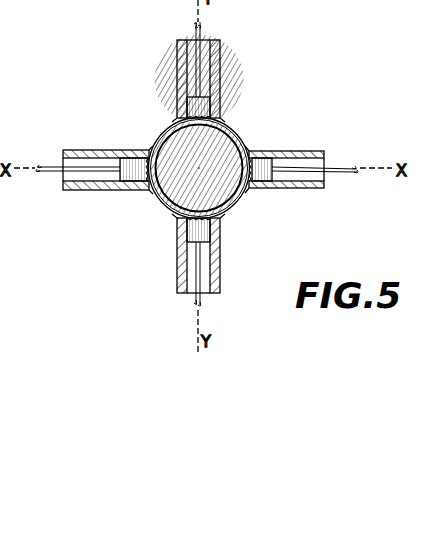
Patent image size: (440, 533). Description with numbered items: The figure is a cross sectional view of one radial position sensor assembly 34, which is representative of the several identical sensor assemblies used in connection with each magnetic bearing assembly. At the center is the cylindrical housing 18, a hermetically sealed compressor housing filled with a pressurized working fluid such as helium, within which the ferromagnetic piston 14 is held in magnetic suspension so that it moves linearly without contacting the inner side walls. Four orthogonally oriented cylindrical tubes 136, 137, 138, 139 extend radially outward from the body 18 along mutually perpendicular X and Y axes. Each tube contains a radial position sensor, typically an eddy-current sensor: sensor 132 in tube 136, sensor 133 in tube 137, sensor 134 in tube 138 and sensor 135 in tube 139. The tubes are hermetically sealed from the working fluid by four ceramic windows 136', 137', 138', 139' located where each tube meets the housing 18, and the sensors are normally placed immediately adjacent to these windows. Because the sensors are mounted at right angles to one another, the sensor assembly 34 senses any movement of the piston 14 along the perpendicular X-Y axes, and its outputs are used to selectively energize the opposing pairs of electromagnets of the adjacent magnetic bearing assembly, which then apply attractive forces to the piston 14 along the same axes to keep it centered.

The piston 14 is at (158, 201).
The cylindrical housing 18 is at (247, 148).
The radial position sensor assembly 34 is at (262, 84).
The radial position sensor 132 is at (193, 106).
The radial position sensor 133 is at (262, 189).
The radial position sensor 134 is at (194, 232).
The radial position sensor 135 is at (133, 149).
The cylindrical tube 136 is at (224, 78).
The ceramic window 136' is at (256, 101).
The cylindrical tube 137 is at (301, 185).
The ceramic window 137' is at (294, 149).
The cylindrical tube 138 is at (222, 253).
The ceramic window 138' is at (241, 235).
The cylindrical tube 139 is at (92, 192).
The ceramic window 139' is at (104, 134).